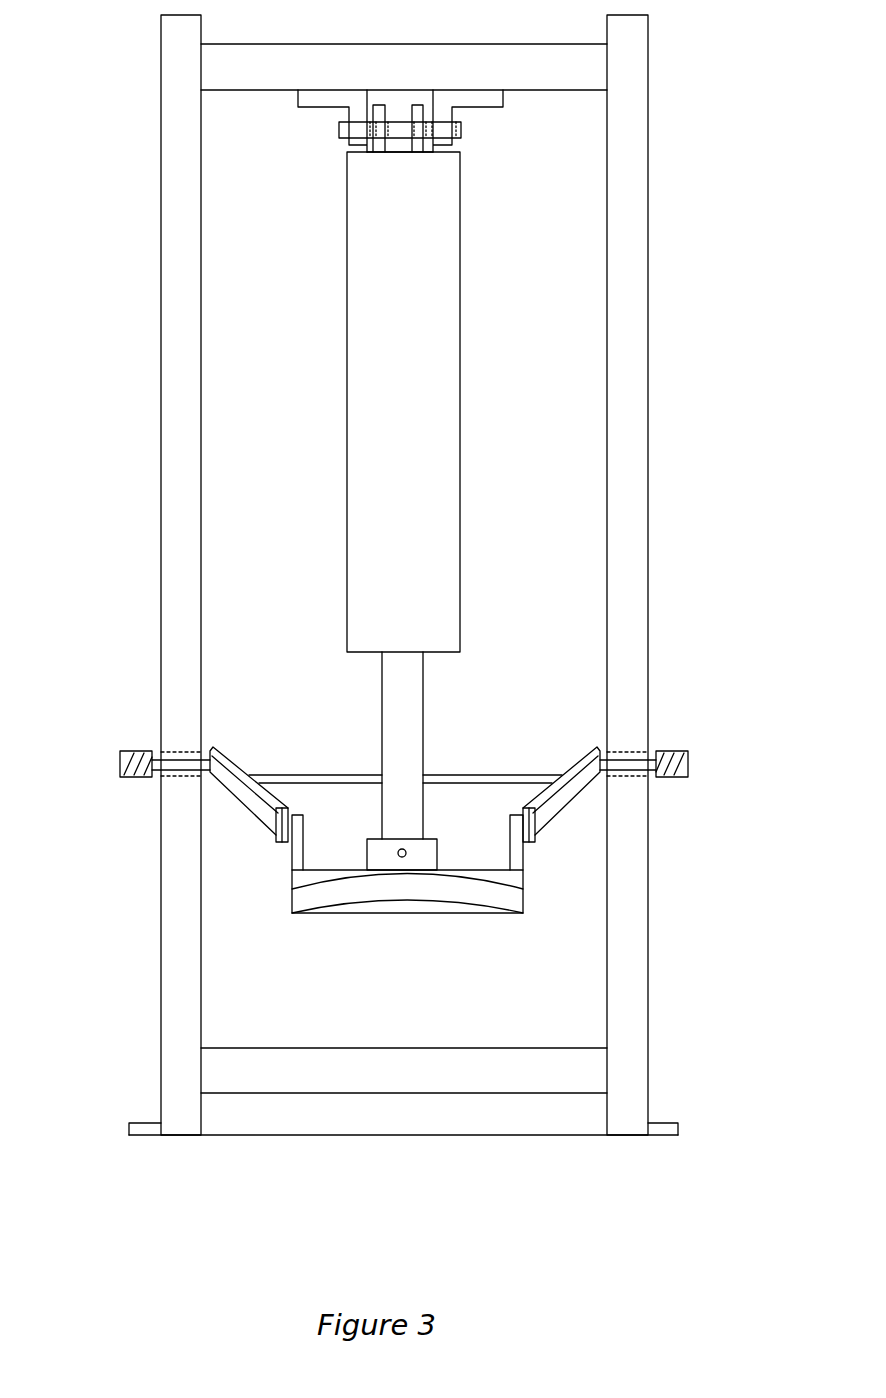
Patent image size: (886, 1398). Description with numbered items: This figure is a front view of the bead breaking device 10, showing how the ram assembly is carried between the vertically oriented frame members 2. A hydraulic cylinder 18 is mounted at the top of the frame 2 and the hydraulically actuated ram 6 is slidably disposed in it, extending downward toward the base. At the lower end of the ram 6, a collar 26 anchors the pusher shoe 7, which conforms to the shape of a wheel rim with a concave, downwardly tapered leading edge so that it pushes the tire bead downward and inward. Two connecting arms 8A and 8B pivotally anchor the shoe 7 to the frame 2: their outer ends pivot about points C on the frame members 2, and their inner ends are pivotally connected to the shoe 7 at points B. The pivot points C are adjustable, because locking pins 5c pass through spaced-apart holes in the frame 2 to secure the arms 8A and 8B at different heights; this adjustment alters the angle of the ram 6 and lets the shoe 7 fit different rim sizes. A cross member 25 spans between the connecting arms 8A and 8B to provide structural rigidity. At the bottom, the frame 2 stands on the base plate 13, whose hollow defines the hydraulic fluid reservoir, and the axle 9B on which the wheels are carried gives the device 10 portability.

The bead breaking device 10 is at (698, 151).
The frame members 2 is at (190, 312).
The base plate 13 is at (445, 1128).
The axle 9B is at (138, 1130).
The hydraulic cylinder 18 is at (418, 255).
The ram 6 is at (393, 727).
The collar 26 is at (458, 832).
The shoe 7 is at (423, 893).
The cross member 25 is at (445, 773).
The connecting arm 8A is at (563, 800).
The connecting arm 8B is at (243, 800).
The locking pins 5c is at (120, 767).
The pivot points C is at (176, 757).
The points B is at (287, 806).